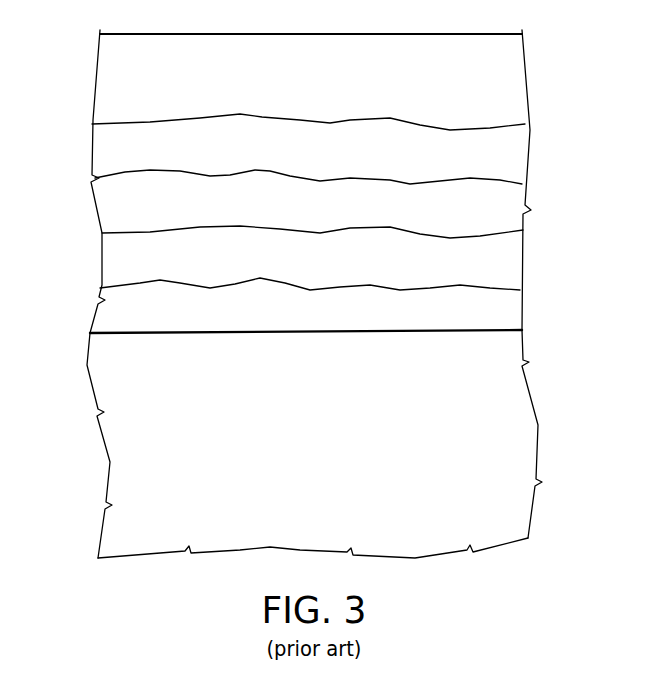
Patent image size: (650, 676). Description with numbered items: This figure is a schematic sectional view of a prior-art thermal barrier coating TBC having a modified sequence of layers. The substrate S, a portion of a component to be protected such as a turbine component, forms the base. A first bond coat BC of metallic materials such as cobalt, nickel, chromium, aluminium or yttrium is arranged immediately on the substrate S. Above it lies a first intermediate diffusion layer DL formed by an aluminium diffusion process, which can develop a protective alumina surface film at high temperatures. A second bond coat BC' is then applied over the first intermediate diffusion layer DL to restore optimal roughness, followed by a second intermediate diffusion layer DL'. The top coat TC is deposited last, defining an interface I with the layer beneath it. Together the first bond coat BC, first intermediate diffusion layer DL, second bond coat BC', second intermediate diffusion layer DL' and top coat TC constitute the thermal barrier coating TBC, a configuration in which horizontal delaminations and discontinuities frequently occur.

The top coat TC is at (520, 75).
The interface I is at (238, 116).
The second intermediate diffusion layer DL' is at (348, 118).
The second bond coat BC' is at (349, 178).
The first intermediate diffusion layer DL is at (352, 236).
The first bond coat BC is at (345, 313).
The substrate S is at (512, 438).
The thermal barrier coating TBC is at (86, 33).